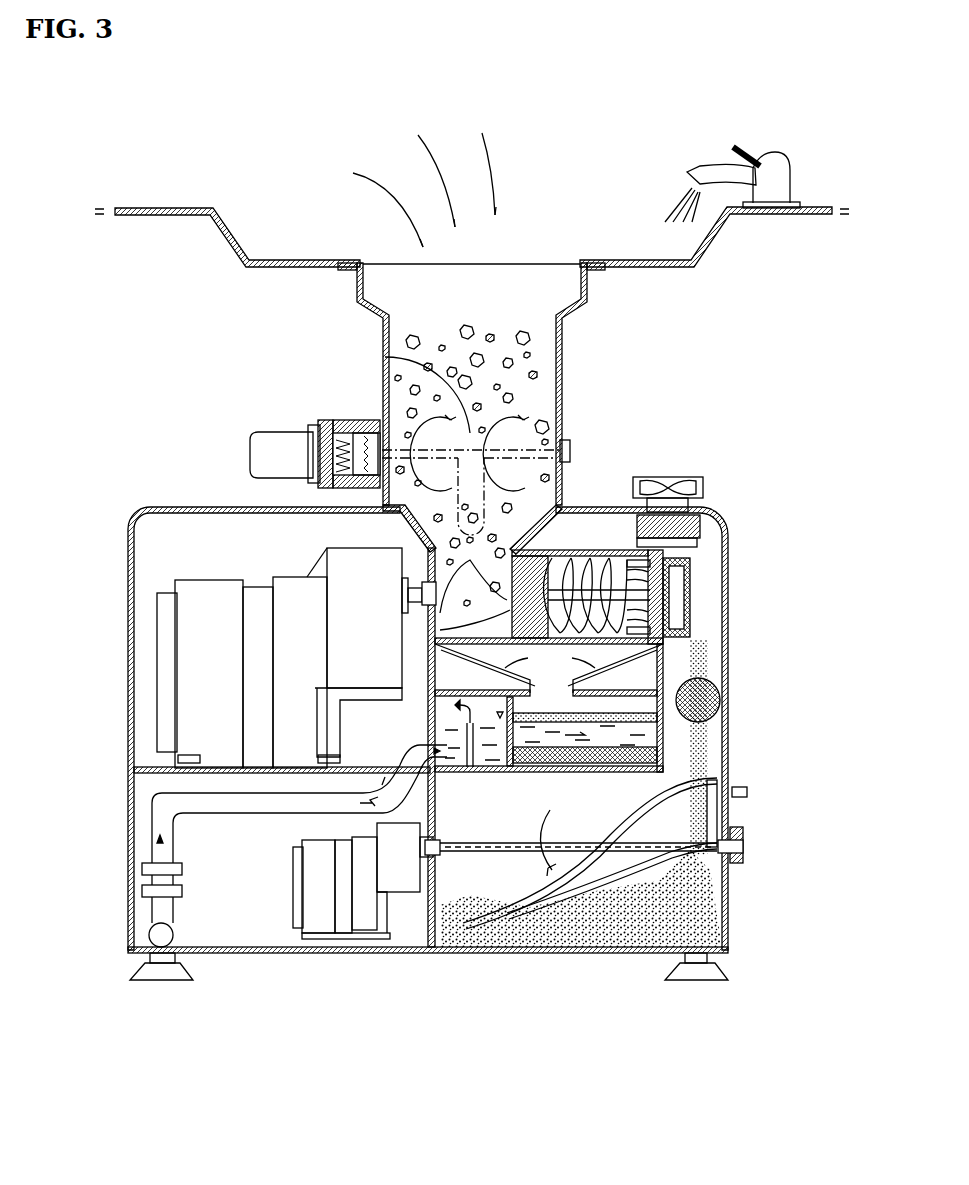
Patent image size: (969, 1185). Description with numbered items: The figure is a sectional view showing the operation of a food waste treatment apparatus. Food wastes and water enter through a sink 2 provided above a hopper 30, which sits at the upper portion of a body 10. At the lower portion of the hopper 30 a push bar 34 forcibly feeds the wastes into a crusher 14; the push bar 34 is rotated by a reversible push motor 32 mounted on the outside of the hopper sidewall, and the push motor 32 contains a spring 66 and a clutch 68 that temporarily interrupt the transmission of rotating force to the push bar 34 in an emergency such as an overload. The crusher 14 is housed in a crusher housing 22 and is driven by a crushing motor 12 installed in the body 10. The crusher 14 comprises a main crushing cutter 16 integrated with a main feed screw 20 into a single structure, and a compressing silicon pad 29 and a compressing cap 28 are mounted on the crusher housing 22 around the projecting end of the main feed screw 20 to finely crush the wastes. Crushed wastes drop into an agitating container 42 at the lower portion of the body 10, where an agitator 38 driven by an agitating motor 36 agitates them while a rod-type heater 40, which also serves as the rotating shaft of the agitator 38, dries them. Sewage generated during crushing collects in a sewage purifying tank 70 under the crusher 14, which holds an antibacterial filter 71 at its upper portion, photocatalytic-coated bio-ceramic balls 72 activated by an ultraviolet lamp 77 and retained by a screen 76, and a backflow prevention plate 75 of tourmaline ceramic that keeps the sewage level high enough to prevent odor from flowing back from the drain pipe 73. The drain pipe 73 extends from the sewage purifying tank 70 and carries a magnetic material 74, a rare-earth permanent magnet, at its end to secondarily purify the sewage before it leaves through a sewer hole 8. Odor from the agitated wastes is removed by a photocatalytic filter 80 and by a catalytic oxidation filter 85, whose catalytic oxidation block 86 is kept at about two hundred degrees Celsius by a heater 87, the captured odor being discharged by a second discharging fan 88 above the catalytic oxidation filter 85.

The sink 2 is at (300, 258).
The sewer hole 8 is at (148, 932).
The body 10 is at (220, 508).
The crushing motor 12 is at (185, 632).
The crusher 14 is at (556, 542).
The main crushing cutter 16 is at (707, 603).
The main feed screw 20 is at (661, 642).
The crusher housing 22 is at (620, 550).
The compressing cap 28 is at (690, 572).
The compressing silicon pad 29 is at (622, 617).
The hopper 30 is at (562, 353).
The push motor 32 is at (263, 442).
The push bar 34 is at (385, 357).
The agitating motor 36 is at (325, 922).
The agitator 38 is at (628, 855).
The rod-type heater 40 is at (603, 852).
The agitating container 42 is at (732, 900).
The spring 66 is at (303, 425).
The clutch 68 is at (345, 420).
The sewage purifying tank 70 is at (657, 742).
The antibacterial filter 71 is at (655, 710).
The bio-ceramic balls 72 is at (657, 757).
The drain pipe 73 is at (235, 813).
The magnetic material 74 is at (152, 866).
The backflow prevention plate 75 is at (502, 712).
The screen 76 is at (498, 740).
The ultraviolet lamp 77 is at (650, 681).
The photocatalytic filter 80 is at (740, 698).
The catalytic oxidation filter 85 is at (733, 470).
The catalytic oxidation block 86 is at (695, 528).
The heater 87 is at (684, 478).
The second discharging fan 88 is at (672, 540).